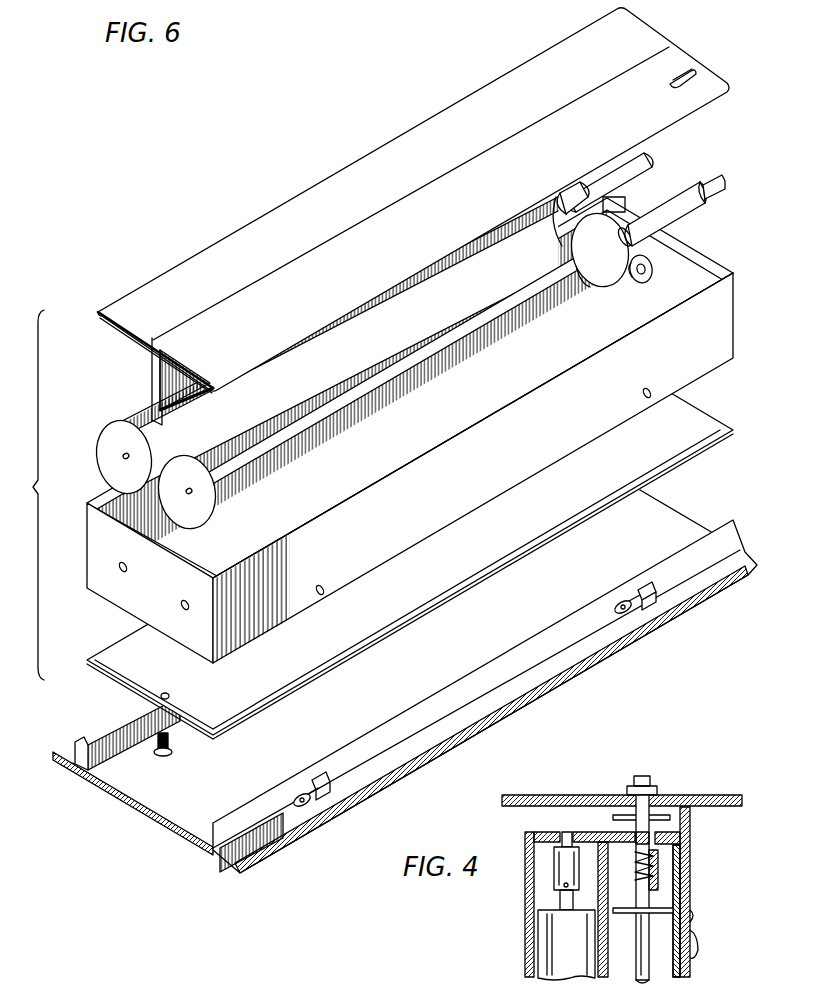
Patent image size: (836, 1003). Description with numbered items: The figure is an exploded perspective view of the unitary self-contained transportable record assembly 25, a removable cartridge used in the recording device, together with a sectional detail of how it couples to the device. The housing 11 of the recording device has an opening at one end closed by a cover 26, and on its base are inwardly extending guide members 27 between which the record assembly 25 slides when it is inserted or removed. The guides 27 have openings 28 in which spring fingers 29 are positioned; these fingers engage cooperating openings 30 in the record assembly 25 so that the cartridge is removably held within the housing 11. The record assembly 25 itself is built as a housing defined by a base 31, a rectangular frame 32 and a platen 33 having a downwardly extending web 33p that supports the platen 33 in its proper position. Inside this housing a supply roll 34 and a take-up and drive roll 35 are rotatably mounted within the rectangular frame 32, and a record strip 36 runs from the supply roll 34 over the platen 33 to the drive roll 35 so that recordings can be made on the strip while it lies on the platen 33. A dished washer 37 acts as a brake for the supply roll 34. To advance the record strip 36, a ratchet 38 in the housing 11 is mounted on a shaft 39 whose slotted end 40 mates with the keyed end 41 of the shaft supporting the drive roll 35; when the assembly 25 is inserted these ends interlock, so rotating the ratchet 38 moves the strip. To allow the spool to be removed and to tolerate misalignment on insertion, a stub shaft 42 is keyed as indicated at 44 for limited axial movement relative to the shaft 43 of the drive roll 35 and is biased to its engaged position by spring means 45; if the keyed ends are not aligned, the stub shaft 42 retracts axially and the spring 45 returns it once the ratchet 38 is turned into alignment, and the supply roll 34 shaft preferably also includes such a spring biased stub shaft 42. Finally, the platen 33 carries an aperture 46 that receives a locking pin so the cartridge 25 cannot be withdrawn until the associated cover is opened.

In FIG. 6, the housing 11 is at (405, 685).
In FIG. 6, the transportable record assembly 25 is at (25, 495).
In FIG. 6, the cover 26 is at (410, 547).
In FIG. 6, the guide members 27 is at (88, 745).
In FIG. 6, the openings 28 is at (326, 792).
In FIG. 6, the spring fingers 29 is at (308, 806).
In FIG. 4, the spring fingers 29 is at (694, 940).
In FIG. 6, the openings 30 is at (326, 592).
In FIG. 6, the base 31 is at (410, 430).
In FIG. 6, the rectangular frame 32 is at (473, 425).
In FIG. 6, the platen 33 is at (427, 216).
In FIG. 6, the web 33p is at (160, 378).
In FIG. 4, the web 33p is at (600, 878).
In FIG. 6, the supply roll 34 is at (315, 348).
In FIG. 4, the supply roll 34 is at (545, 908).
In FIG. 6, the take-up and drive roll 35 is at (172, 490).
In FIG. 4, the take-up and drive roll 35 is at (628, 913).
In FIG. 6, the record strip 36 is at (101, 440).
In FIG. 4, the dished washer 37 is at (552, 848).
In FIG. 4, the ratchet 38 is at (700, 795).
In FIG. 4, the shaft 39 is at (640, 778).
In FIG. 4, the slotted end 40 is at (625, 820).
In FIG. 6, the keyed end 41 is at (640, 269).
In FIG. 4, the keyed end 41 is at (690, 826).
In FIG. 6, the stub shaft 42 is at (616, 178).
In FIG. 4, the stub shaft 42 is at (562, 868).
In FIG. 6, the shaft 43 is at (550, 291).
In FIG. 4, the key 44 is at (644, 903).
In FIG. 4, the spring means 45 is at (640, 860).
In FIG. 6, the aperture 46 is at (683, 82).